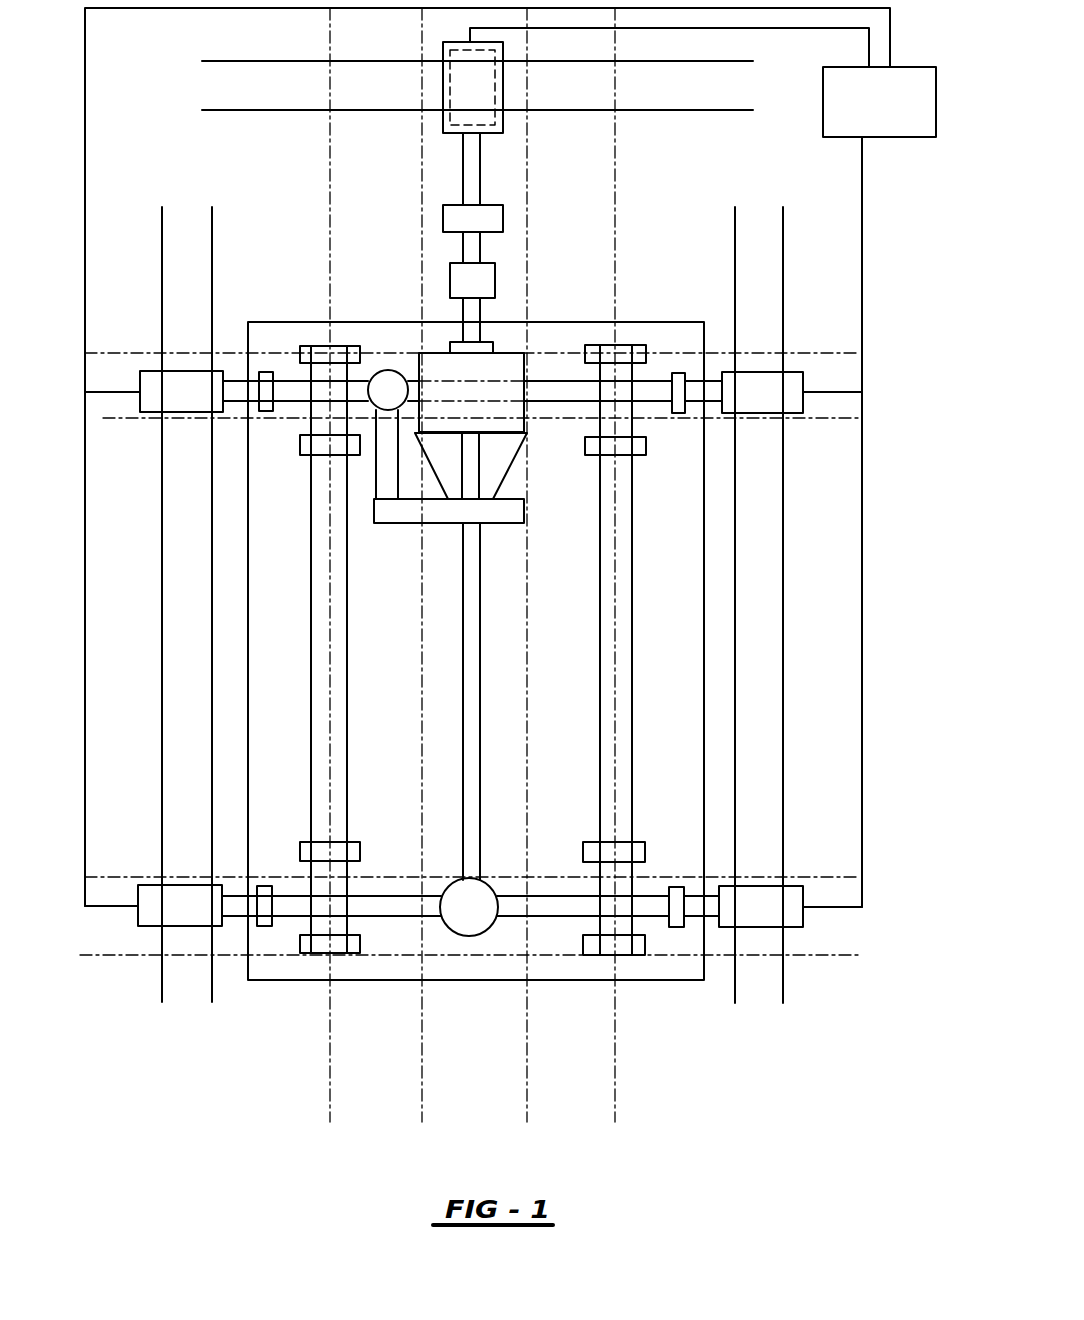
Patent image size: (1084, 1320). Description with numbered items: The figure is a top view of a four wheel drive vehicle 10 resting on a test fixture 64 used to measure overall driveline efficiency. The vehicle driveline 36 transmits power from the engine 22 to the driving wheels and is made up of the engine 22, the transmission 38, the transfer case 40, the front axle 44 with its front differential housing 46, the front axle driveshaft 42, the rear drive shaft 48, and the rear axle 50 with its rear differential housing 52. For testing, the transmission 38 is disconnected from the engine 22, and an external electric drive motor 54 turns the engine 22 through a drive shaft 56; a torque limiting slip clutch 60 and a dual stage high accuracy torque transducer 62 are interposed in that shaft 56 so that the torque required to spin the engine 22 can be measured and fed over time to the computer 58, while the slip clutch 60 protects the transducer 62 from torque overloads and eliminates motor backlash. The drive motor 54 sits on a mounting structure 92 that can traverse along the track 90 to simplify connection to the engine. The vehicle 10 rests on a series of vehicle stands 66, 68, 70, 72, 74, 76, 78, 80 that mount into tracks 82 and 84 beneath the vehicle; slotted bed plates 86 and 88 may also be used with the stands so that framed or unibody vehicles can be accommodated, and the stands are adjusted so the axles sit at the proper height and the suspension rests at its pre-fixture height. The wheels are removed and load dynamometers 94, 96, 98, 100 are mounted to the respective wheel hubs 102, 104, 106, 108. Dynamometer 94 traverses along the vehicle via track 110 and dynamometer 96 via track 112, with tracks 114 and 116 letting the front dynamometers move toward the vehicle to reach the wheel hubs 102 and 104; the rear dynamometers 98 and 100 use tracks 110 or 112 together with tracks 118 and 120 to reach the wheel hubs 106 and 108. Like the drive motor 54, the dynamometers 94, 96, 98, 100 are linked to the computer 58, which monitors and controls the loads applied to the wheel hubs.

The vehicle 10 is at (258, 322).
The engine 22 is at (508, 353).
The driveline 36 is at (395, 600).
The transmission 38 is at (522, 468).
The transfer case 40 is at (500, 523).
The front axle driveshaft 42 is at (378, 482).
The front axle 44 is at (566, 382).
The front differential housing 46 is at (392, 370).
The rear drive shaft 48 is at (482, 740).
The rear axle 50 is at (560, 897).
The rear differential housing 52 is at (493, 876).
The external drive motor 54 is at (443, 42).
The drive shaft 56 is at (463, 163).
The computer 58 is at (891, 137).
The torque limiting slip clutch 60 is at (503, 218).
The dual stage high accuracy torque transducer 62 is at (495, 282).
The test fixture 64 is at (889, 377).
The vehicle stand 66 is at (300, 346).
The vehicle stand 68 is at (645, 345).
The vehicle stand 70 is at (306, 458).
The vehicle stand 72 is at (647, 447).
The vehicle stand 74 is at (357, 851).
The vehicle stand 76 is at (583, 842).
The vehicle stand 78 is at (298, 942).
The vehicle stand 80 is at (645, 945).
The track 82 is at (327, 1083).
The track 84 is at (612, 1075).
The slotted bed plate 86 is at (421, 1040).
The slotted bed plate 88 is at (525, 1097).
The track 90 is at (247, 110).
The mounting structure 92 is at (505, 90).
The load dynamometer 94 is at (185, 412).
The load dynamometer 96 is at (760, 417).
The load dynamometer 98 is at (182, 880).
The load dynamometer 100 is at (760, 887).
The wheel hub 102 is at (268, 418).
The wheel hub 104 is at (687, 372).
The wheel hub 106 is at (260, 883).
The wheel hub 108 is at (677, 885).
The track 110 is at (210, 243).
The track 112 is at (783, 270).
The track 114 is at (105, 352).
The track 116 is at (104, 422).
The track 118 is at (113, 877).
The track 120 is at (94, 957).